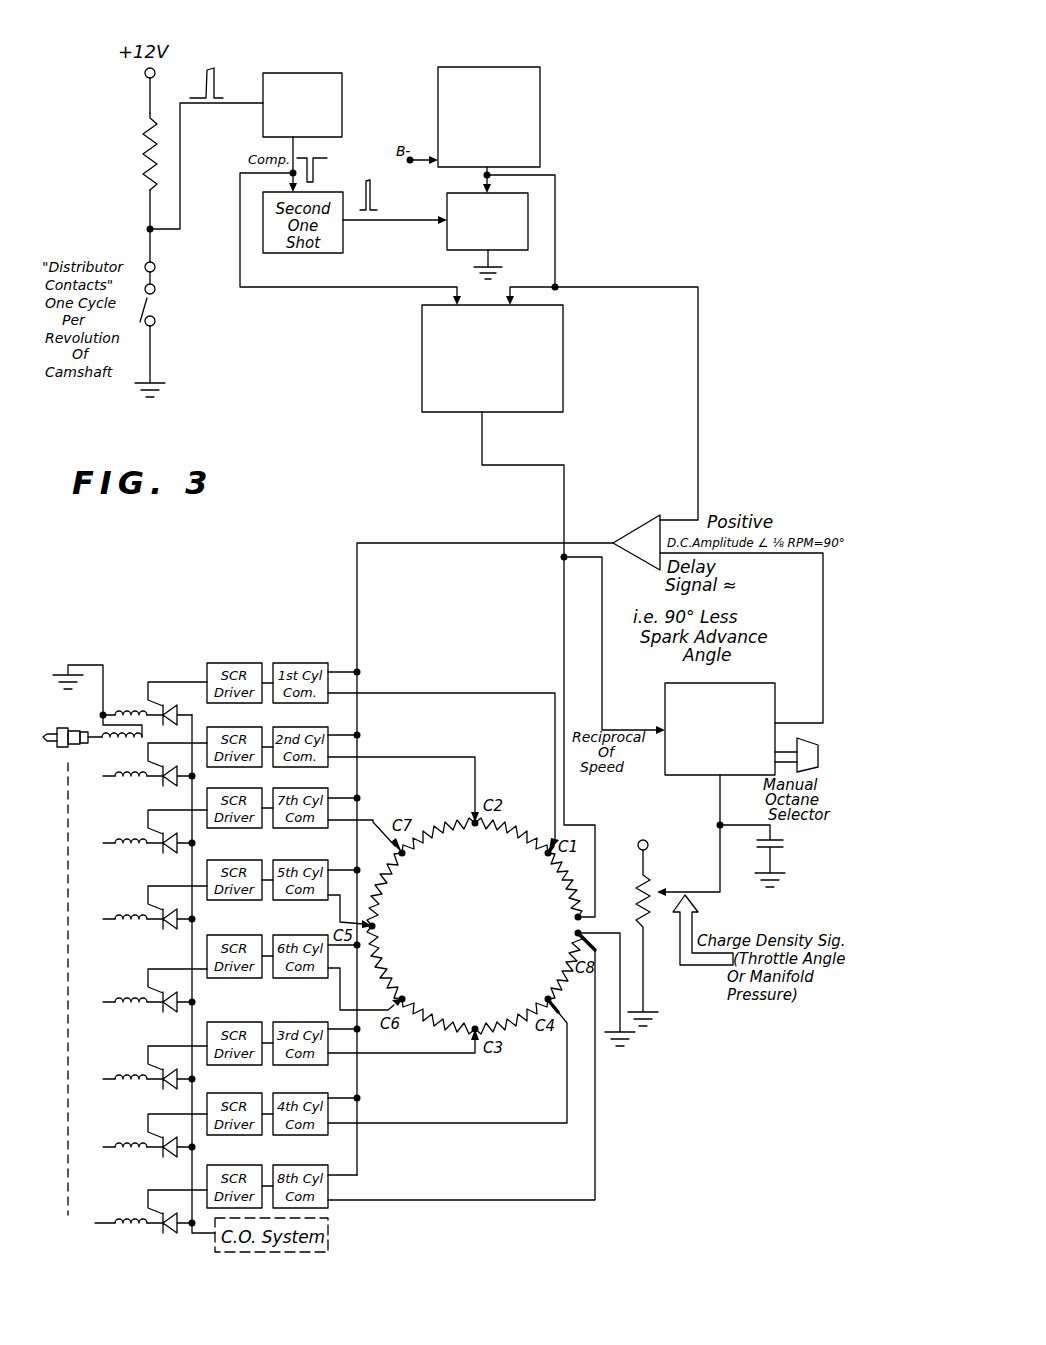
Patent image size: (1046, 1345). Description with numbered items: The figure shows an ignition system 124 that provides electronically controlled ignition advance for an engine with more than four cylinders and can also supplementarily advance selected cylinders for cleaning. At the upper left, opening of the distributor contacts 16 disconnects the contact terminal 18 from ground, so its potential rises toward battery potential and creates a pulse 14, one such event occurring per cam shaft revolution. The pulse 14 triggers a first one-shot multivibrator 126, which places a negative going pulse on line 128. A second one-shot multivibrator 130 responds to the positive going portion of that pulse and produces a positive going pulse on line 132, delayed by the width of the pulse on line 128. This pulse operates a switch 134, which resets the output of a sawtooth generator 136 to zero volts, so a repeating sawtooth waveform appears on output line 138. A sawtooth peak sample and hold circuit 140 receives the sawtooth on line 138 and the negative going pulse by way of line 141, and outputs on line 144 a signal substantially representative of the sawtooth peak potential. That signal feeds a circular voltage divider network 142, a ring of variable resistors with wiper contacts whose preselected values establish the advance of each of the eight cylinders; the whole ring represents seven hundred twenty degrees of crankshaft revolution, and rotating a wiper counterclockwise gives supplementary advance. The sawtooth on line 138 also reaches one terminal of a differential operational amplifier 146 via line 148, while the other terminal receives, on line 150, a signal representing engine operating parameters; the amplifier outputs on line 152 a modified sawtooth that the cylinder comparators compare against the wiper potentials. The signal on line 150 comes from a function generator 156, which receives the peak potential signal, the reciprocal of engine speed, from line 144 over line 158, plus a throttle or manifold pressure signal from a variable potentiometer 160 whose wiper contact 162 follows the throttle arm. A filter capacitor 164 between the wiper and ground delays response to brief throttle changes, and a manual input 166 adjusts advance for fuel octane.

The pulse 14 is at (228, 64).
The distributor contacts 16 is at (158, 307).
The contact terminal 18 is at (148, 228).
The ignition system 124 is at (732, 103).
The first one-shot multivibrator 126 is at (313, 71).
The line 128 is at (292, 143).
The second one-shot multivibrator 130 is at (323, 188).
The line 132 is at (377, 224).
The switch 134 is at (447, 237).
The sawtooth generator 136 is at (542, 118).
The output line 138 is at (555, 190).
The sawtooth peak sample and hold circuit 140 is at (555, 350).
The line 141 is at (287, 289).
The circular voltage divider network 142 is at (493, 925).
The line 144 is at (483, 447).
The differential operational amplifier 146 is at (637, 522).
The line 148 is at (697, 397).
The line 150 is at (823, 658).
The line 152 is at (583, 543).
The function generator 156 is at (677, 777).
The line 158 is at (602, 665).
The variable potentiometer 160 is at (628, 892).
The wiper contact 162 is at (662, 888).
The filter capacitor 164 is at (778, 845).
The manual input 166 is at (820, 750).